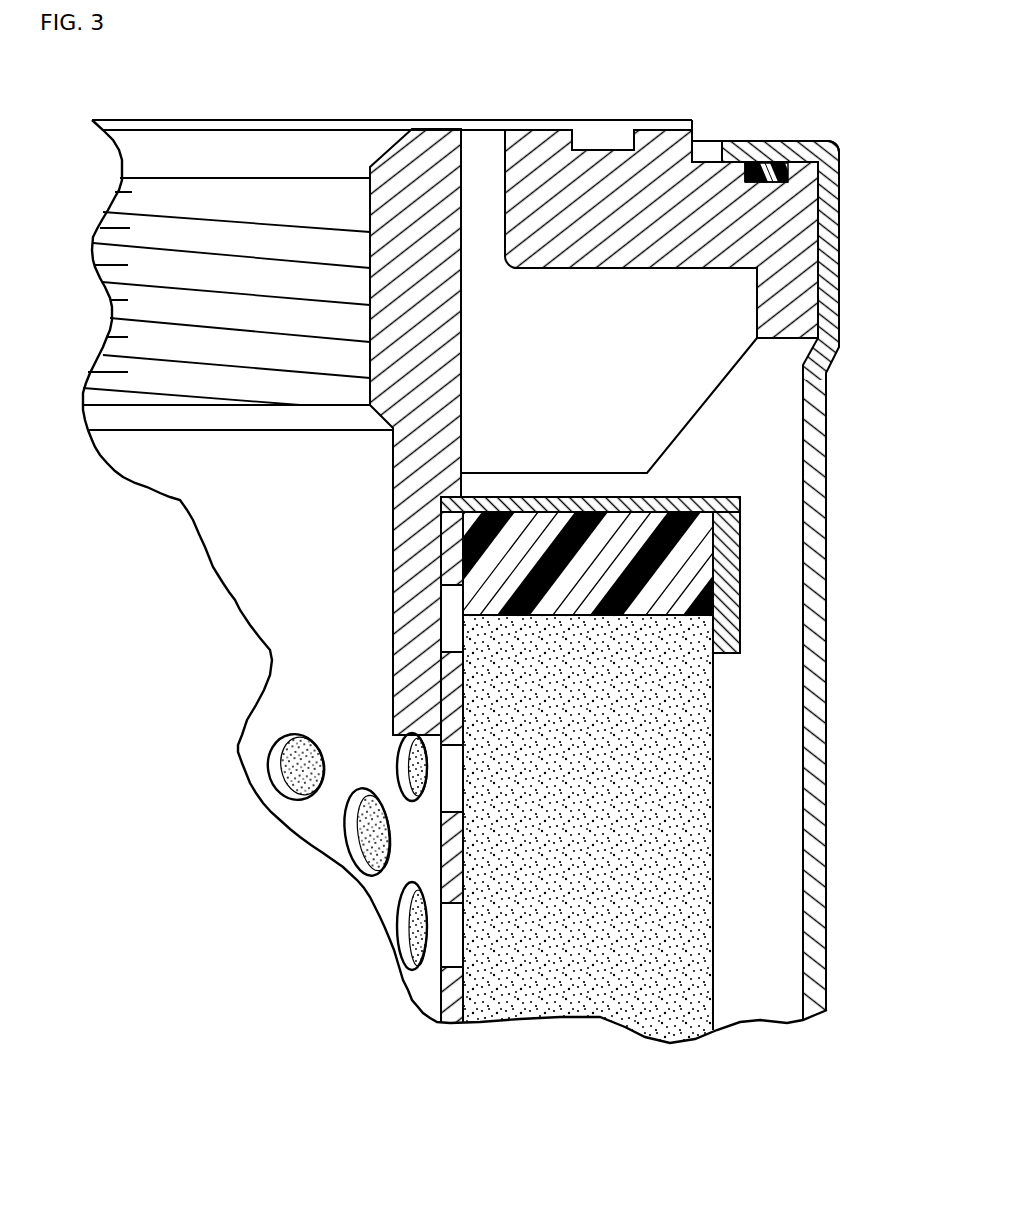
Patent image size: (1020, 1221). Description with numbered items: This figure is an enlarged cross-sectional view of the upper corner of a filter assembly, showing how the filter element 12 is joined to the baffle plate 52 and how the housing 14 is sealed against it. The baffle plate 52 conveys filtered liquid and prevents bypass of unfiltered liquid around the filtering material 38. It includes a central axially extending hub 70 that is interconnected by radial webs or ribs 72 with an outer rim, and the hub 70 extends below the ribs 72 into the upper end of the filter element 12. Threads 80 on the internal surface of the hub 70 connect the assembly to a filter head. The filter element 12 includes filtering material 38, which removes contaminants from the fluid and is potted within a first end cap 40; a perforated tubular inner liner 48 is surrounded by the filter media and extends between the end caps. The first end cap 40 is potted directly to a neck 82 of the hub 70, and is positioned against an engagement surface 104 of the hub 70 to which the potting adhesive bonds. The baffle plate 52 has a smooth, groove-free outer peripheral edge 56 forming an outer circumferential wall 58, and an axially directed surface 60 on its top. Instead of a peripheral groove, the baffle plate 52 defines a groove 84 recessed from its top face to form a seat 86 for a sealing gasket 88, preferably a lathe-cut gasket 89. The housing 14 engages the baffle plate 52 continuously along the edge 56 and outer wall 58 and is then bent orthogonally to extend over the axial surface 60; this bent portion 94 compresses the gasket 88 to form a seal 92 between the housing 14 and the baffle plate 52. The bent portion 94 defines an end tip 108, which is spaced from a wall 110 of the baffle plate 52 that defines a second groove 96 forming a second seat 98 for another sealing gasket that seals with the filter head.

The filter element 12 is at (735, 778).
The housing 14 is at (826, 705).
The filtering material 38 is at (500, 1020).
The first end cap 40 is at (740, 582).
The perforated tubular inner liner 48 is at (440, 1003).
The baffle plate 52 is at (655, 120).
The outer peripheral edge 56 is at (828, 310).
The outer circumferential wall 58 is at (822, 268).
The axially directed surface 60 is at (737, 170).
The hub 70 is at (388, 158).
The radial webs or ribs 72 is at (604, 368).
The threads 80 is at (200, 215).
The neck 82 is at (395, 668).
The groove 84 is at (790, 165).
The seat 86 is at (748, 178).
The sealing gasket 88 is at (770, 163).
The lathe-cut gasket 89 is at (775, 182).
The seal 92 is at (826, 144).
The bent portion 94 is at (757, 141).
The second groove 96 is at (633, 138).
The second seat 98 is at (580, 142).
The engagement surface 104 is at (470, 495).
The end tip 108 is at (722, 140).
The wall 110 is at (693, 128).